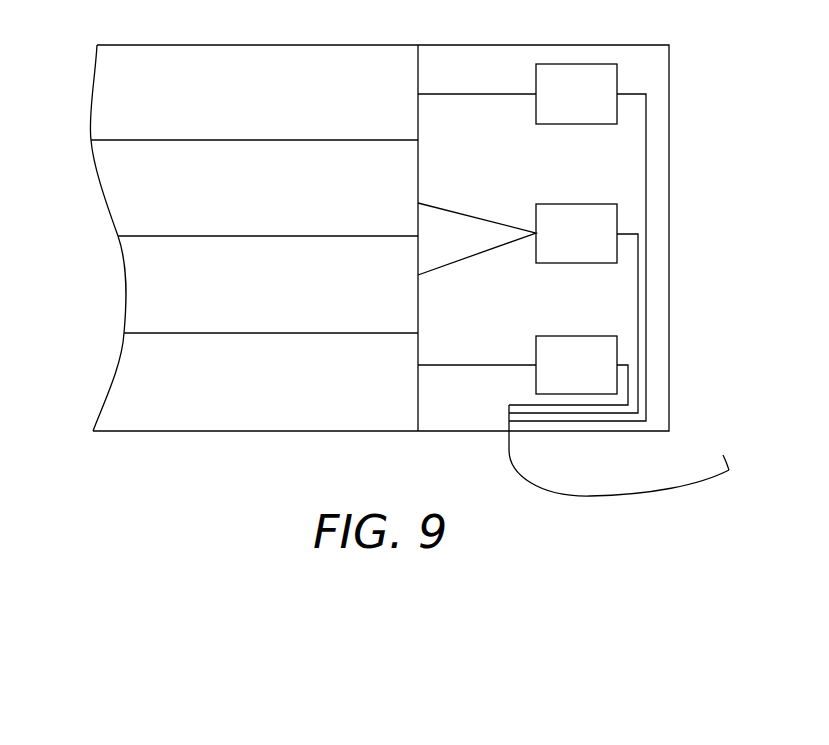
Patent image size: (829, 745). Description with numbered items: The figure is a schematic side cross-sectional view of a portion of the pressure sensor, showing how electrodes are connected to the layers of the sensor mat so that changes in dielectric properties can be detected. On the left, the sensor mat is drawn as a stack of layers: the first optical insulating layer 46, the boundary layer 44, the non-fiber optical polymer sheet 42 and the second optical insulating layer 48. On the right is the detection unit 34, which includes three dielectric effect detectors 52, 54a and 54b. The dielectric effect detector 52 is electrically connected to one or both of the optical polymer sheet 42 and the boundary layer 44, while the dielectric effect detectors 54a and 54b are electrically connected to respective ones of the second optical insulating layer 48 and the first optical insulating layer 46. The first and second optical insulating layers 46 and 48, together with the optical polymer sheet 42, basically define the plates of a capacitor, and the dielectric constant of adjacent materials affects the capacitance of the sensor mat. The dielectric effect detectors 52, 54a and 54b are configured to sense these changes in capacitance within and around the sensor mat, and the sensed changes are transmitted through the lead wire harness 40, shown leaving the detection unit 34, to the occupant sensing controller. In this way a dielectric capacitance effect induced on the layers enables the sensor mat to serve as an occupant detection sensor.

The detection unit 34 is at (660, 65).
The lead wire harness 40 is at (578, 495).
The non-fiber optical polymer sheet 42 is at (120, 305).
The boundary layer 44 is at (108, 180).
The first optical insulating layer 46 is at (260, 63).
The second optical insulating layer 48 is at (222, 417).
The dielectric effect detector 52 is at (605, 253).
The dielectric effect detector 54a is at (607, 107).
The dielectric effect detector 54b is at (605, 384).